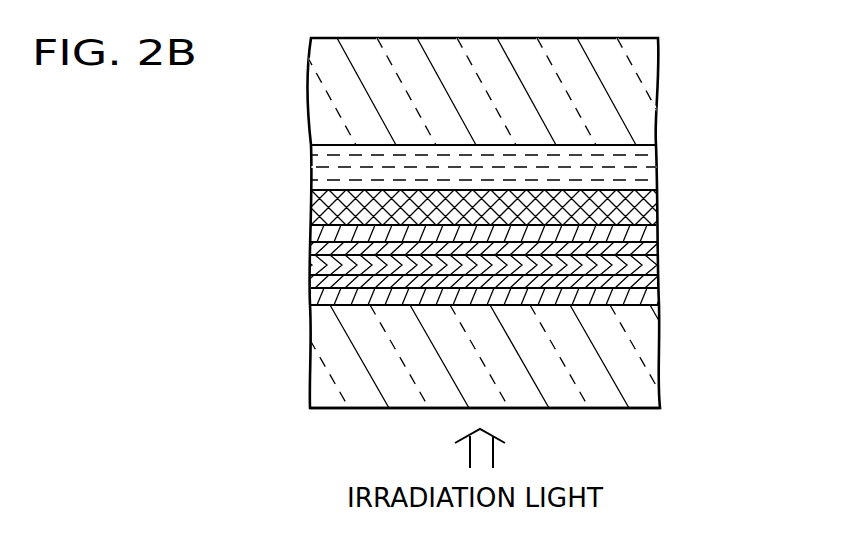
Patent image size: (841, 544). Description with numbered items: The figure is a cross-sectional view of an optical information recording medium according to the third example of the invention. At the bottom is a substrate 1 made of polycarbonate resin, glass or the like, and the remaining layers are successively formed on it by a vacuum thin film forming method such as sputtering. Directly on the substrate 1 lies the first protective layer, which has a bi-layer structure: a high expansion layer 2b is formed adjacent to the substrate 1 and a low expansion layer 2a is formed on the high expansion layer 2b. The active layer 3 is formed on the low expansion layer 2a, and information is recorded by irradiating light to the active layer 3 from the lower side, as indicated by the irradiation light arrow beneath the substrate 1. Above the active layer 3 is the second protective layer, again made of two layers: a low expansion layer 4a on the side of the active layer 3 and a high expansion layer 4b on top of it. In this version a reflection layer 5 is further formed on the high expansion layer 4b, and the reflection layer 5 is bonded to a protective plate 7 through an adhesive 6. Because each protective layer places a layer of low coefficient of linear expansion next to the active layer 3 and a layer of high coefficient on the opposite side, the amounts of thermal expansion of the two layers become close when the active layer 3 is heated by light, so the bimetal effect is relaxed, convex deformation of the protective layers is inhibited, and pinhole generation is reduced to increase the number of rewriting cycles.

The substrate 1 is at (638, 352).
The low expansion layer 2a is at (645, 285).
The high expansion layer 2b is at (650, 298).
The active layer 3 is at (643, 268).
The low expansion layer 4a is at (643, 250).
The high expansion layer 4b is at (648, 228).
The reflection layer 5 is at (640, 200).
The adhesive 6 is at (640, 158).
The protective plate 7 is at (635, 100).